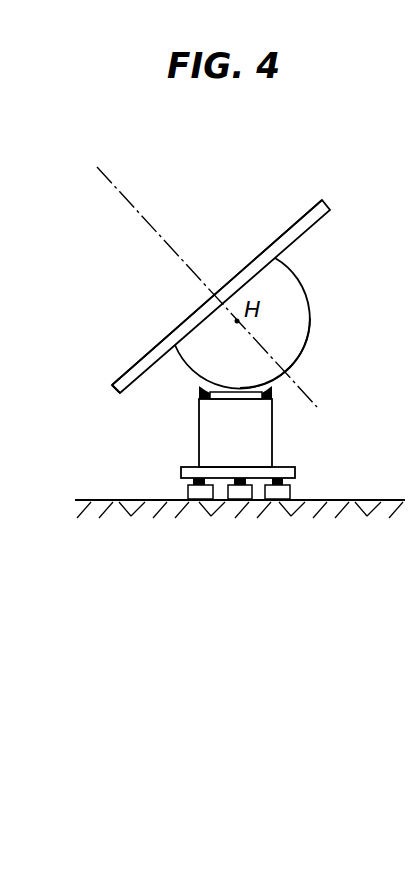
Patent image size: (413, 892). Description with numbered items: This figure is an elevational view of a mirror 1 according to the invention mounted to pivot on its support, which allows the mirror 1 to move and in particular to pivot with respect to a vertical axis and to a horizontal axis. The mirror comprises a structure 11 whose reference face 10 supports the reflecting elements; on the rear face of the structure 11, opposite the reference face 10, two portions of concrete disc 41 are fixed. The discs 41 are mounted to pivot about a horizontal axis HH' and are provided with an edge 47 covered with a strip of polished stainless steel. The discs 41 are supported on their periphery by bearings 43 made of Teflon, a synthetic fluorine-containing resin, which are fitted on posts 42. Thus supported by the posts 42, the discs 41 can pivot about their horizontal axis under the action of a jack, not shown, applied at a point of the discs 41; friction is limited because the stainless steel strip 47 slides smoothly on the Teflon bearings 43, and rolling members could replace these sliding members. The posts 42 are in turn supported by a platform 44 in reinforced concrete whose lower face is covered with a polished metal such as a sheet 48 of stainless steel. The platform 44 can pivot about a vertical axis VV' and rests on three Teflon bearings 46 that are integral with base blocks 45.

The mirror 1 is at (323, 224).
The reference face 10 is at (298, 217).
The structure 11 is at (113, 393).
The concrete disc 41 is at (299, 351).
The post 42 is at (272, 436).
The bearing 43 is at (199, 398).
The platform 44 is at (293, 474).
The base block 45 is at (276, 499).
The bearing 46 is at (191, 482).
The edge 47 is at (312, 312).
The sheet 48 is at (300, 489).